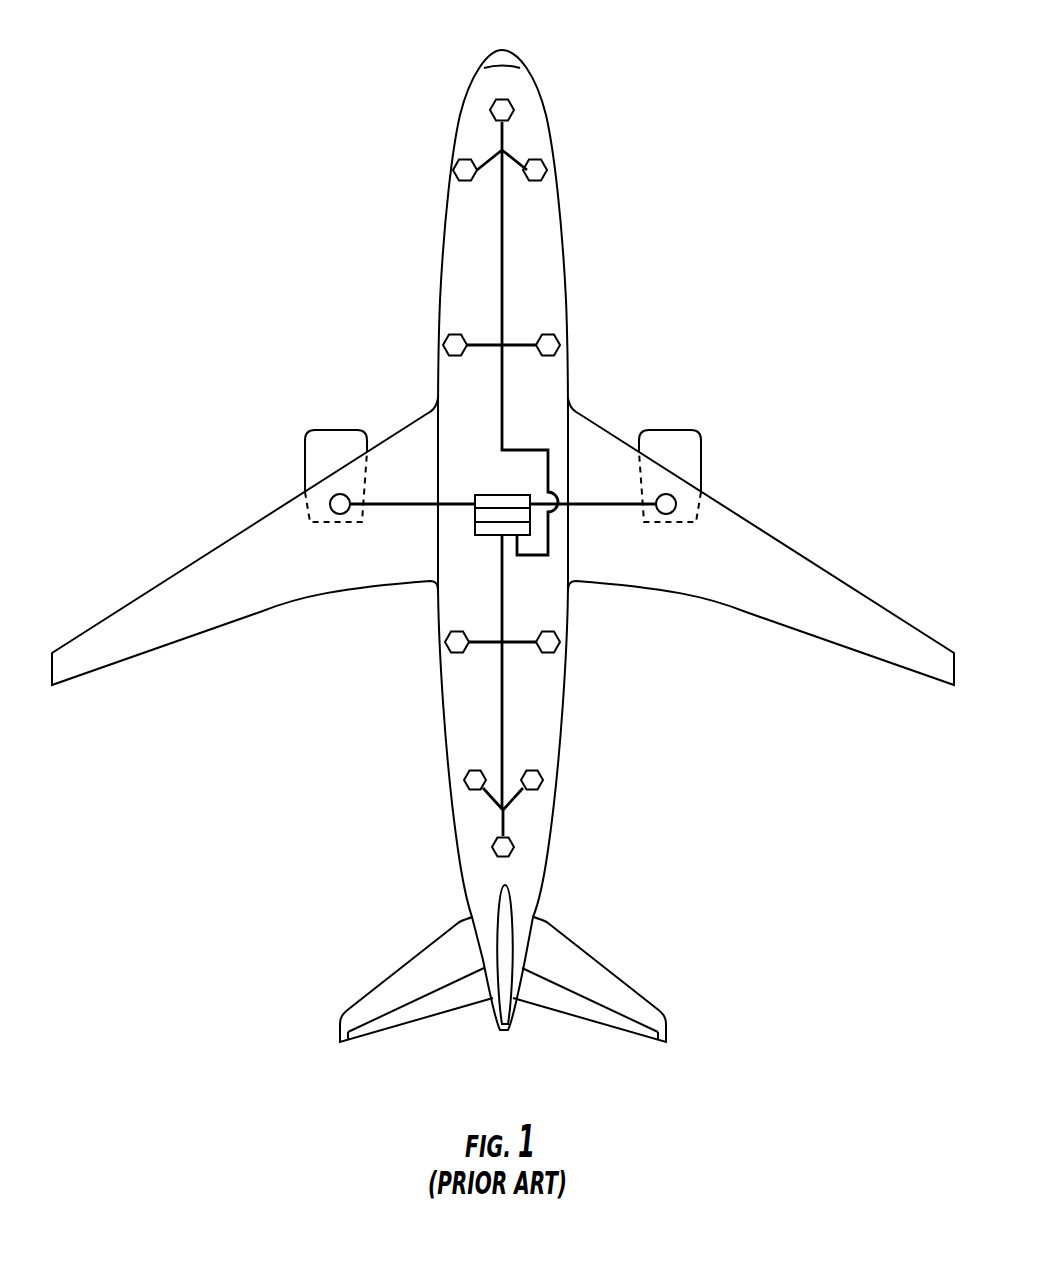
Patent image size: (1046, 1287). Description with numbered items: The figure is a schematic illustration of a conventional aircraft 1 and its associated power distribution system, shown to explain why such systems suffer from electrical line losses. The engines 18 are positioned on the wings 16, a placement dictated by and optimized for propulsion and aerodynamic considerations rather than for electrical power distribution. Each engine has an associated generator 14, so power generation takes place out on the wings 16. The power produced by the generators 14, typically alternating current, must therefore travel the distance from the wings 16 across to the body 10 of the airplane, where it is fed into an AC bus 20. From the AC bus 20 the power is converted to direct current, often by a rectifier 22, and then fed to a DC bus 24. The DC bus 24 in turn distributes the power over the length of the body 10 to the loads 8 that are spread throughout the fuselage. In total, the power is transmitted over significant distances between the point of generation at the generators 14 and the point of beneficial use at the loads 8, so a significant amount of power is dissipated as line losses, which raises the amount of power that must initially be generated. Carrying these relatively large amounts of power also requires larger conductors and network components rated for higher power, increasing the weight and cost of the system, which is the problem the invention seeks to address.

The aircraft 1 is at (503, 537).
The loads 8 is at (506, 110).
The body 10 is at (550, 705).
The generators 14 is at (330, 504).
The wings 16 is at (256, 612).
The engines 18 is at (325, 430).
The AC bus 20 is at (488, 495).
The rectifier 22 is at (474, 517).
The DC bus 24 is at (488, 535).